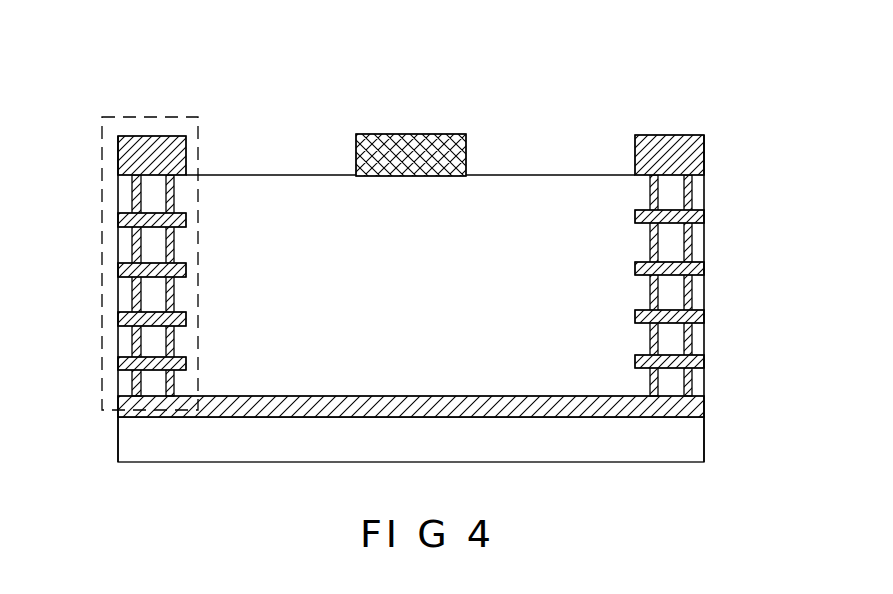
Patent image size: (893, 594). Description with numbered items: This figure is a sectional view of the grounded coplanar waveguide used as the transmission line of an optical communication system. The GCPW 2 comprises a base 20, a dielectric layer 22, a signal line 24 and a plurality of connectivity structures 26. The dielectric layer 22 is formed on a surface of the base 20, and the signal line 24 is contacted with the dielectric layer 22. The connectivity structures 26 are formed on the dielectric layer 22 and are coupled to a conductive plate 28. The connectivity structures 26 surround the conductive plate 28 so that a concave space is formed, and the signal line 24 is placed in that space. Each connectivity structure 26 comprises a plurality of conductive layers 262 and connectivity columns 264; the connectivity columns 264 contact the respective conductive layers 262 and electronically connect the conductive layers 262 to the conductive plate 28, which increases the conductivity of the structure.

The GCPW 2 is at (544, 68).
The base 20 is at (118, 440).
The dielectric layer 22 is at (312, 176).
The signal line 24 is at (415, 133).
The connectivity structure 26 is at (118, 117).
The conductive layer 262 is at (100, 158).
The connectivity column 264 is at (137, 382).
The conductive plate 28 is at (704, 403).